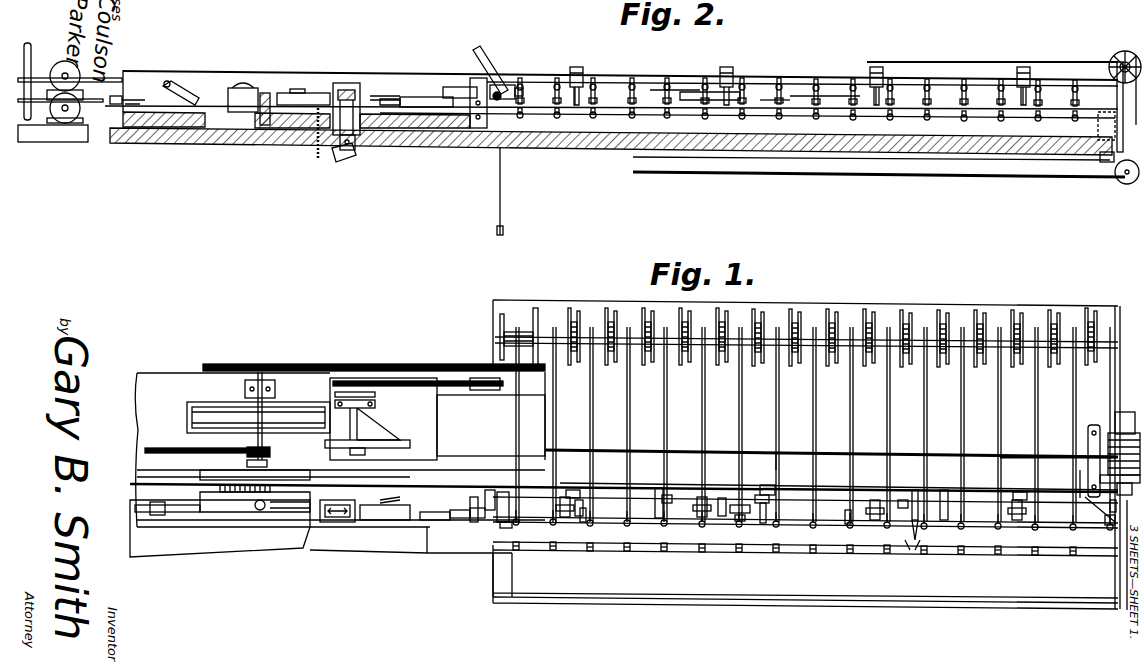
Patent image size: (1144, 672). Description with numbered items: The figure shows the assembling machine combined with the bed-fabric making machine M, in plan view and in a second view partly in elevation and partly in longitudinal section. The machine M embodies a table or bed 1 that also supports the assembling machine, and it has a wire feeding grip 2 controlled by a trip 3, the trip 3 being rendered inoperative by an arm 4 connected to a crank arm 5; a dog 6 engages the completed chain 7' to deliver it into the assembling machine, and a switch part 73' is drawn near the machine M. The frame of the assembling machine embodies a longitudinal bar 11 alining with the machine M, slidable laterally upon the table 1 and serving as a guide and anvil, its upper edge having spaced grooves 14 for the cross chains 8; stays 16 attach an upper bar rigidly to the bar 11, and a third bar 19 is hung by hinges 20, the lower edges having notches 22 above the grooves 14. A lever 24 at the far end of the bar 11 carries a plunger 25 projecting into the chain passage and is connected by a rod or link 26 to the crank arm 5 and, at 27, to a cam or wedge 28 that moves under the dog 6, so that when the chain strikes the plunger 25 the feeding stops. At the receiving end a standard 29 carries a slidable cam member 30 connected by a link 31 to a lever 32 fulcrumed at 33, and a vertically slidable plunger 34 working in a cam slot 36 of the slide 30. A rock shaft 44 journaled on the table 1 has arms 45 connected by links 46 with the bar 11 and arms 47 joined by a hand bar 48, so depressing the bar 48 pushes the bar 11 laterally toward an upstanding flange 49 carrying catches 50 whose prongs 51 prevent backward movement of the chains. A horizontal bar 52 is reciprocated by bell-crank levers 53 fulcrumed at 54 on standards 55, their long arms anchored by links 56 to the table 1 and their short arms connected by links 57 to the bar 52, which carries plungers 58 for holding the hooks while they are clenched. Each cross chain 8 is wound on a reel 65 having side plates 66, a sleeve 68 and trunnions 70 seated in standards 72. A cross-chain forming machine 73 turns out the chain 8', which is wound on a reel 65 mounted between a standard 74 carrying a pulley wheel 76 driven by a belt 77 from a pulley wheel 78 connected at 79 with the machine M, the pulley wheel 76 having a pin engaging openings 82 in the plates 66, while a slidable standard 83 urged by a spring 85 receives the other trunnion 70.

In FIG. 2, the table or bed 1 is at (545, 145).
In FIG. 1, the table or bed 1 is at (425, 560).
In FIG. 2, the wire feeding grip 2 is at (180, 88).
In FIG. 1, the wire feeding grip 2 is at (180, 512).
In FIG. 2, the trip 3 is at (140, 100).
In FIG. 1, the trip 3 is at (502, 492).
In FIG. 2, the arm 4 is at (115, 105).
In FIG. 1, the arm 4 is at (740, 497).
In FIG. 2, the crank arm 5 is at (122, 96).
In FIG. 1, the crank arm 5 is at (914, 505).
In FIG. 2, the dog 6 is at (405, 97).
In FIG. 1, the dog 6 is at (415, 522).
In FIG. 2, the chain 7' is at (389, 154).
In FIG. 1, the cross chains 8 is at (813, 424).
In FIG. 1, the chain 8' is at (786, 444).
In FIG. 2, the longitudinal bar 11 is at (525, 128).
In FIG. 2, the grooves or channels 14 is at (625, 117).
In FIG. 1, the stays or members 16 is at (490, 498).
In FIG. 2, the third bar 19 is at (655, 105).
In FIG. 1, the third bar 19 is at (645, 522).
In FIG. 2, the hinges 20 is at (860, 100).
In FIG. 1, the hinges 20 is at (713, 524).
In FIG. 2, the notches or recesses 22 is at (765, 110).
In FIG. 2, the lever 24 is at (1105, 100).
In FIG. 1, the lever 24 is at (1102, 530).
In FIG. 2, the plunger 25 is at (1100, 125).
In FIG. 1, the plunger 25 is at (1110, 527).
In FIG. 2, the rod or link 26 is at (245, 88).
In FIG. 1, the rod or link 26 is at (1050, 495).
In FIG. 2, the connection 27 is at (380, 98).
In FIG. 1, the connection 27 is at (388, 500).
In FIG. 2, the cam or wedge 28 is at (375, 150).
In FIG. 1, the cam or wedge 28 is at (370, 522).
In FIG. 2, the standard 29 is at (477, 128).
In FIG. 1, the standard 29 is at (465, 530).
In FIG. 2, the slidable cam member 30 is at (470, 85).
In FIG. 1, the slidable cam member 30 is at (445, 527).
In FIG. 2, the link 31 is at (497, 82).
In FIG. 1, the link 31 is at (478, 522).
In FIG. 2, the lever 32 is at (508, 85).
In FIG. 2, the fulcrum 33 is at (512, 90).
In FIG. 1, the fulcrum 33 is at (506, 528).
In FIG. 2, the vertically slidable plunger 34 is at (473, 62).
In FIG. 1, the vertically slidable plunger 34 is at (472, 500).
In FIG. 2, the cam slot 36 is at (452, 88).
In FIG. 1, the rock shaft 44 is at (975, 495).
In FIG. 1, the arms 45 is at (658, 488).
In FIG. 1, the links 46 is at (663, 495).
In FIG. 1, the arms or levers 47 is at (493, 595).
In FIG. 1, the longitudinal bar 48 is at (718, 600).
In FIG. 1, the flange 49 is at (810, 525).
In FIG. 1, the catches 50 is at (850, 527).
In FIG. 1, the prongs 51 is at (918, 540).
In FIG. 2, the horizontal bar 52 is at (695, 93).
In FIG. 1, the horizontal bar 52 is at (763, 498).
In FIG. 2, the bell-crank levers 53 is at (582, 72).
In FIG. 1, the bell-crank levers 53 is at (590, 524).
In FIG. 2, the fulcrum 54 is at (583, 95).
In FIG. 1, the fulcrum 54 is at (745, 525).
In FIG. 2, the standards or posts 55 is at (576, 67).
In FIG. 1, the standards or posts 55 is at (565, 497).
In FIG. 1, the links 56 is at (583, 505).
In FIG. 2, the links 57 is at (884, 70).
In FIG. 1, the links 57 is at (573, 522).
In FIG. 2, the plungers 58 is at (862, 100).
In FIG. 1, the plungers 58 is at (780, 525).
In FIG. 2, the reel 65 is at (780, 113).
In FIG. 1, the reel 65 is at (1017, 340).
In FIG. 1, the side plates or strips 66 is at (835, 338).
In FIG. 1, the sleeve 68 is at (792, 340).
In FIG. 1, the trunnions 70 is at (943, 335).
In FIG. 1, the standards 72 is at (537, 320).
In FIG. 1, the cross chain forming machine 73 is at (435, 399).
In FIG. 2, the switch 73' is at (348, 86).
In FIG. 1, the switch 73' is at (408, 550).
In FIG. 1, the standard 74 is at (1110, 440).
In FIG. 1, the pulley wheel 76 is at (1125, 412).
In FIG. 2, the belt 77 is at (1100, 165).
In FIG. 2, the pulley wheel 78 is at (1127, 184).
In FIG. 2, the connection 79 is at (1005, 178).
In FIG. 2, the openings 82 is at (1125, 50).
In FIG. 1, the slidably mounted standard 83 is at (1080, 480).
In FIG. 1, the spring 85 is at (1115, 520).
In FIG. 2, the machine M is at (304, 82).
In FIG. 1, the machine M is at (315, 372).